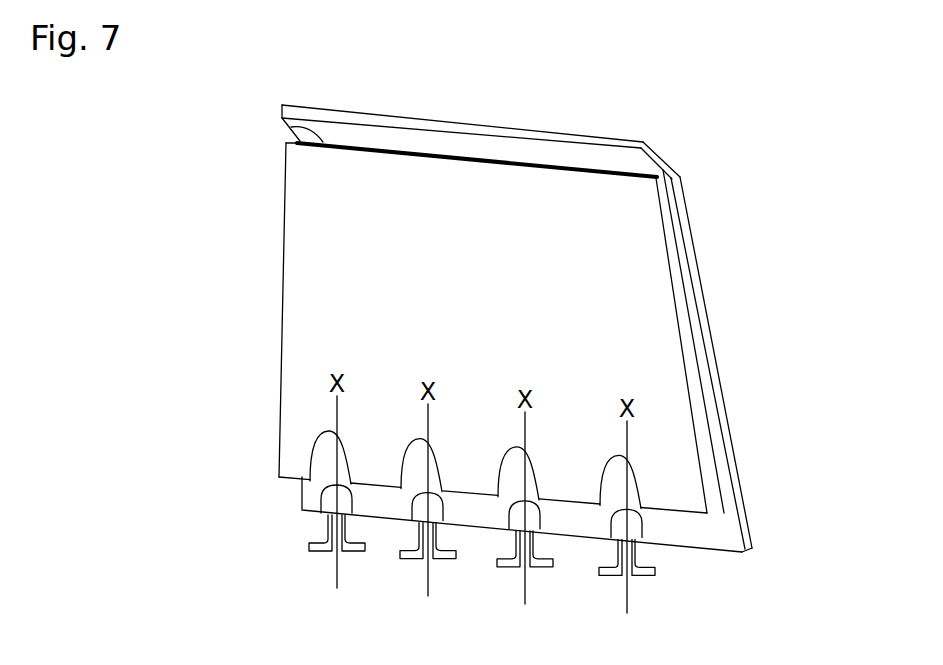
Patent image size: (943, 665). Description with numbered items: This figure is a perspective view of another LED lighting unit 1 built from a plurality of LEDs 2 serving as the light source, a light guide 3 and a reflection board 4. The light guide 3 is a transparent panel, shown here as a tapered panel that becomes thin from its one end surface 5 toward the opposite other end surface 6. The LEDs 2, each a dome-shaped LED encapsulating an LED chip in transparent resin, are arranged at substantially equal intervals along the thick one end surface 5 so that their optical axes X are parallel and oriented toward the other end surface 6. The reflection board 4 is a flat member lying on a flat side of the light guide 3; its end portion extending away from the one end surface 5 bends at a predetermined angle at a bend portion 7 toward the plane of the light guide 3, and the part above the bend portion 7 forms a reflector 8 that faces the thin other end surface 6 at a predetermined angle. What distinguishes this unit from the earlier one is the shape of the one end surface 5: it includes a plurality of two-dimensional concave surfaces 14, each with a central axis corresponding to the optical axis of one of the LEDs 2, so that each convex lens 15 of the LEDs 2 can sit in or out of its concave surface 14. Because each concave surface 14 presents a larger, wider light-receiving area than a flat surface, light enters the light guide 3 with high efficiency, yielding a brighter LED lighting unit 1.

The LED lighting unit 1 is at (706, 105).
The LEDs 2 is at (325, 507).
The light guide 3 is at (720, 510).
The reflection board 4 is at (748, 535).
The one end surface 5 is at (290, 484).
The other end surface 6 is at (290, 128).
The bend portion 7 is at (680, 156).
The reflector 8 is at (608, 164).
The concave surfaces 14 is at (327, 442).
The convex lens 15 is at (323, 487).